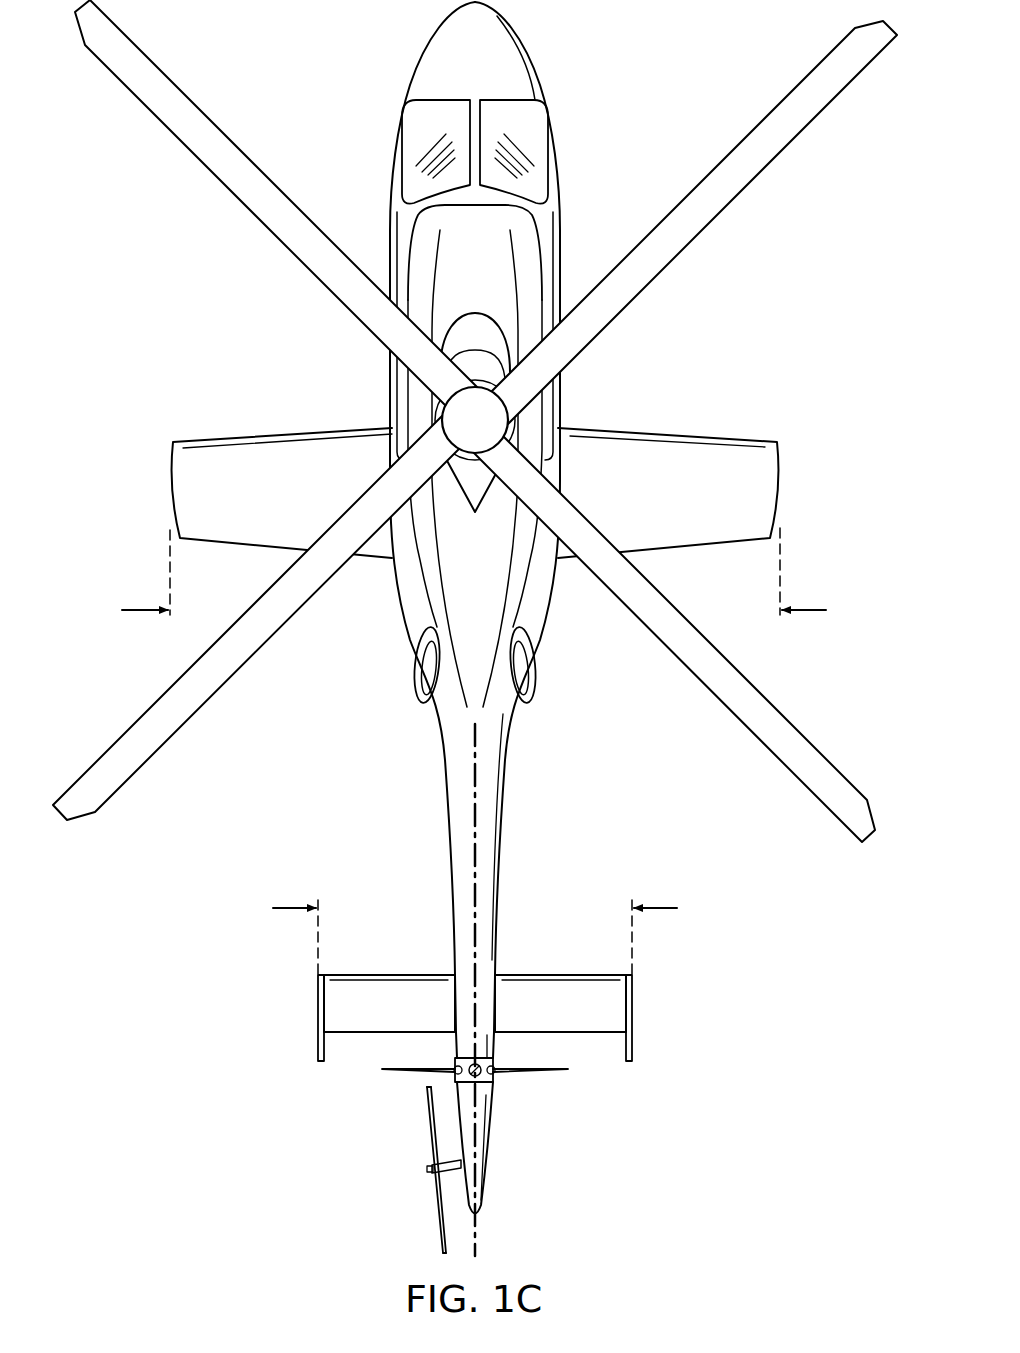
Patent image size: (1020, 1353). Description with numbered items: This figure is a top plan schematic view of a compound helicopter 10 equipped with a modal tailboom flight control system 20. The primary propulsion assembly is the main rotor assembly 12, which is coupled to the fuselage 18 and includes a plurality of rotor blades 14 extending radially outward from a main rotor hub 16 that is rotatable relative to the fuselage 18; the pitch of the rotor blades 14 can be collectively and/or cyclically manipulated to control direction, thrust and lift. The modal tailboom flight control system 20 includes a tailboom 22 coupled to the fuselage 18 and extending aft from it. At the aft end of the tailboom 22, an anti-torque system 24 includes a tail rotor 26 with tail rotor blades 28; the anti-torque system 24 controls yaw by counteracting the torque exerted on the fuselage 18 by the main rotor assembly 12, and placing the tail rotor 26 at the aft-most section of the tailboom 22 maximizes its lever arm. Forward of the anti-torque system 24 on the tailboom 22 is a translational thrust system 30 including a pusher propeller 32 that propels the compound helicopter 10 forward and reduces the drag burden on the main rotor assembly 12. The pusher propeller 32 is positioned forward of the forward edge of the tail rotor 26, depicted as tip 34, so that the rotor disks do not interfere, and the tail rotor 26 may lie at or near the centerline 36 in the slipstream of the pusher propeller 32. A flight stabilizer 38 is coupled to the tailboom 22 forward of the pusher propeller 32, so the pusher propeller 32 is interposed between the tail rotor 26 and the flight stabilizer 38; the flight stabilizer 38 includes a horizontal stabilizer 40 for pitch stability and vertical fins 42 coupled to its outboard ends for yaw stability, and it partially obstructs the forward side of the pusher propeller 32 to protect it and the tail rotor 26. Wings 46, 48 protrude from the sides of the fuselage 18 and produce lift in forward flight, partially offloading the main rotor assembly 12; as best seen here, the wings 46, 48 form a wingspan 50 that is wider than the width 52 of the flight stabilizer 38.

The compound helicopter 10 is at (284, 80).
The main rotor assembly 12 is at (436, 412).
The rotor blades 14 is at (84, 45).
The main rotor hub 16 is at (500, 413).
The fuselage 18 is at (532, 60).
The modal tailboom flight control system 20 is at (553, 1148).
The tailboom 22 is at (487, 814).
The anti-torque system 24 is at (434, 1208).
The tail rotor 26 is at (442, 1252).
The tail rotor blades 28 is at (429, 1122).
The translational thrust system 30 is at (550, 1078).
The pusher propeller 32 is at (505, 1075).
The tip 34 is at (427, 1086).
The centerline 36 is at (477, 886).
The flight stabilizer 38 is at (360, 988).
The horizontal stabilizer 40 is at (405, 988).
The vertical fins 42 is at (318, 1012).
The wing 46 is at (252, 447).
The wing 48 is at (697, 447).
The wingspan 50 is at (132, 614).
The width 52 is at (283, 906).